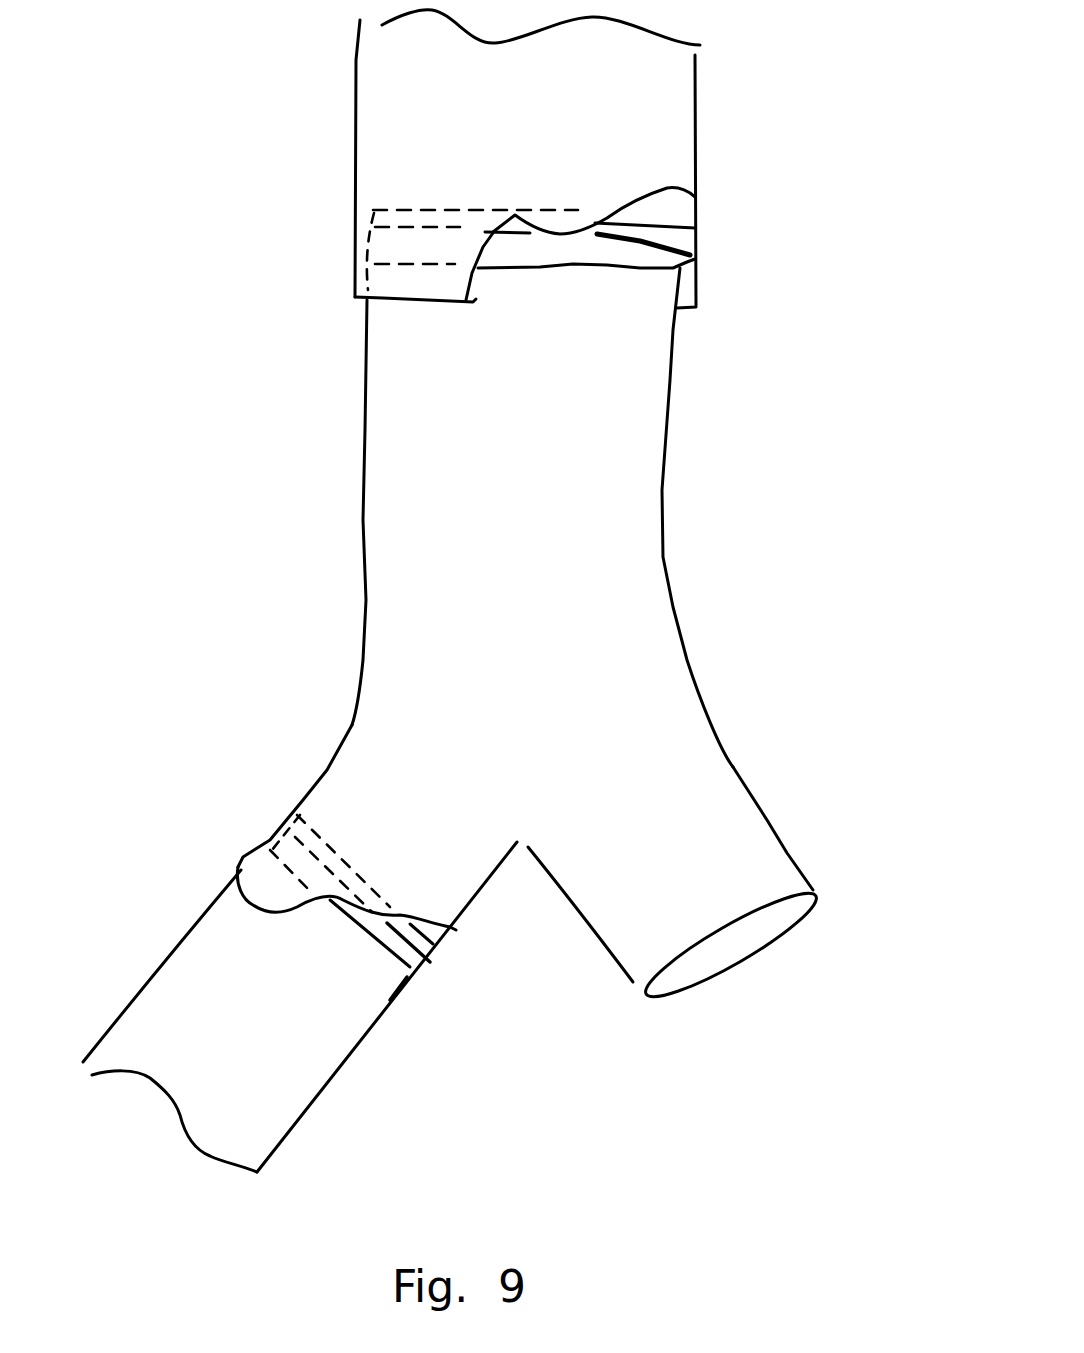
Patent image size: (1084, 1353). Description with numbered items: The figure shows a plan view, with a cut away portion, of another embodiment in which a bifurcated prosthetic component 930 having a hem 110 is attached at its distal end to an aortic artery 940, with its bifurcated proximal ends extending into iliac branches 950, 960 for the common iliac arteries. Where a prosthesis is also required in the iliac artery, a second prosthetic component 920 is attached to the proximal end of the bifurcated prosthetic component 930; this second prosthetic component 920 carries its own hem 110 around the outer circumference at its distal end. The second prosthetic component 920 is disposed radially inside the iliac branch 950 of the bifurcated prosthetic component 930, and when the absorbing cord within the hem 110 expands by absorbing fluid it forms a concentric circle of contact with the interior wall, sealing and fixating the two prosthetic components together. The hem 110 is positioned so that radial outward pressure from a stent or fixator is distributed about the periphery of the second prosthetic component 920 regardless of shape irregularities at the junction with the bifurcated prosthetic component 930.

The aortic artery 940 is at (695, 128).
The hem 110 is at (695, 255).
The bifurcated prosthetic component 930 is at (662, 488).
The iliac branch 950 is at (330, 770).
The second prosthetic component 920 is at (333, 1042).
The iliac branch 960 is at (785, 855).